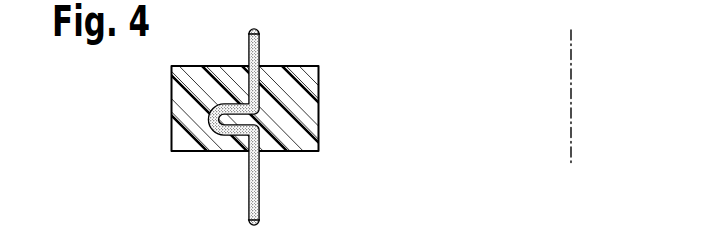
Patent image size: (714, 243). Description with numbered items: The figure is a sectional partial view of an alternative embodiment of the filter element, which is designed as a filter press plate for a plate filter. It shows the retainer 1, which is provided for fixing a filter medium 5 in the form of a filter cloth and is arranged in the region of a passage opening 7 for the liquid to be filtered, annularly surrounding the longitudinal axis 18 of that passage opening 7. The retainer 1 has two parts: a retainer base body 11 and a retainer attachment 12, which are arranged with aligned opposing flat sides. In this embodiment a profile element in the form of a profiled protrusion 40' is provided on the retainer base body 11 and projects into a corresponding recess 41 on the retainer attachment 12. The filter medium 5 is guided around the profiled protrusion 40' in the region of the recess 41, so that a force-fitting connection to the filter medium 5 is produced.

The retainer 1 is at (477, 66).
The filter medium 5 is at (260, 44).
The passage opening 7 is at (484, 122).
The retainer base body 11 is at (306, 144).
The retainer attachment 12 is at (204, 151).
The longitudinal axis 18 is at (572, 97).
The profiled protrusion 40' is at (296, 118).
The recess 41 is at (209, 120).